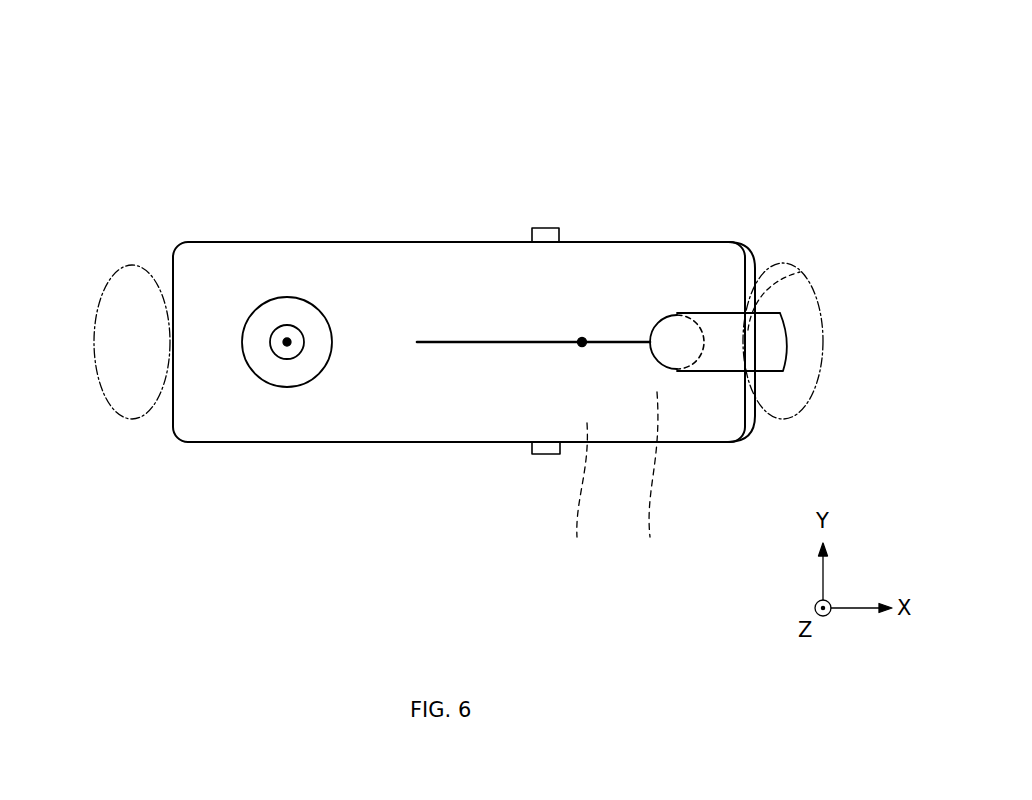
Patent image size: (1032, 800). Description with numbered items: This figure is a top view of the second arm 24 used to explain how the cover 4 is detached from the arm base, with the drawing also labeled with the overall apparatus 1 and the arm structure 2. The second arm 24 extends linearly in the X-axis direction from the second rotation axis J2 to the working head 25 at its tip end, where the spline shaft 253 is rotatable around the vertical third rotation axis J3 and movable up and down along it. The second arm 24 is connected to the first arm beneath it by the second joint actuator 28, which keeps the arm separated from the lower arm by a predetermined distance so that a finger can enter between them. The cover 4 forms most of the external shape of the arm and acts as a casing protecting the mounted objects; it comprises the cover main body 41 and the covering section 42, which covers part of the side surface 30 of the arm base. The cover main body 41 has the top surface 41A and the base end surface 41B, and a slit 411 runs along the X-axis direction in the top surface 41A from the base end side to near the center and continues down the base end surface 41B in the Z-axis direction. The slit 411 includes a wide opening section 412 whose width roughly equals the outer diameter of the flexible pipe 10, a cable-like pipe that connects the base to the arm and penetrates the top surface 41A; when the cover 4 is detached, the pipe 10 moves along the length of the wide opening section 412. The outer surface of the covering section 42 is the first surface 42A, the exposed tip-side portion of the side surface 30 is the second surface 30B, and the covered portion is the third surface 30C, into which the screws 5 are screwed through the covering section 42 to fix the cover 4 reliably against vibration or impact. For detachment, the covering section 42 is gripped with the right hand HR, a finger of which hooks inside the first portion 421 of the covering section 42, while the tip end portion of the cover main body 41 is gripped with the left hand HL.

The display system 1 is at (768, 82).
The controller / operation device 2 is at (636, 160).
The cover 4 is at (221, 258).
The screw 5 is at (543, 228).
The pipe 10 is at (768, 340).
The second arm 24 is at (218, 445).
The working head 25 is at (243, 360).
The spline shaft 253 is at (287, 338).
The second joint actuator 28 is at (652, 478).
The side surface 30 is at (323, 443).
The second surface 30B is at (325, 486).
The third surface 30C is at (589, 494).
The cover main body 41 is at (410, 423).
The top surface 41A is at (368, 272).
The base end surface 41B is at (747, 270).
The slit 411 is at (465, 337).
The wide opening section 412 is at (677, 313).
The covering section 42 is at (803, 350).
The first portion 421 is at (750, 412).
The first surface 42A is at (702, 442).
The second rotation axis J2 is at (583, 337).
The third rotation axis J3 is at (287, 346).
The left hand HL is at (92, 284).
The right hand HR is at (826, 358).